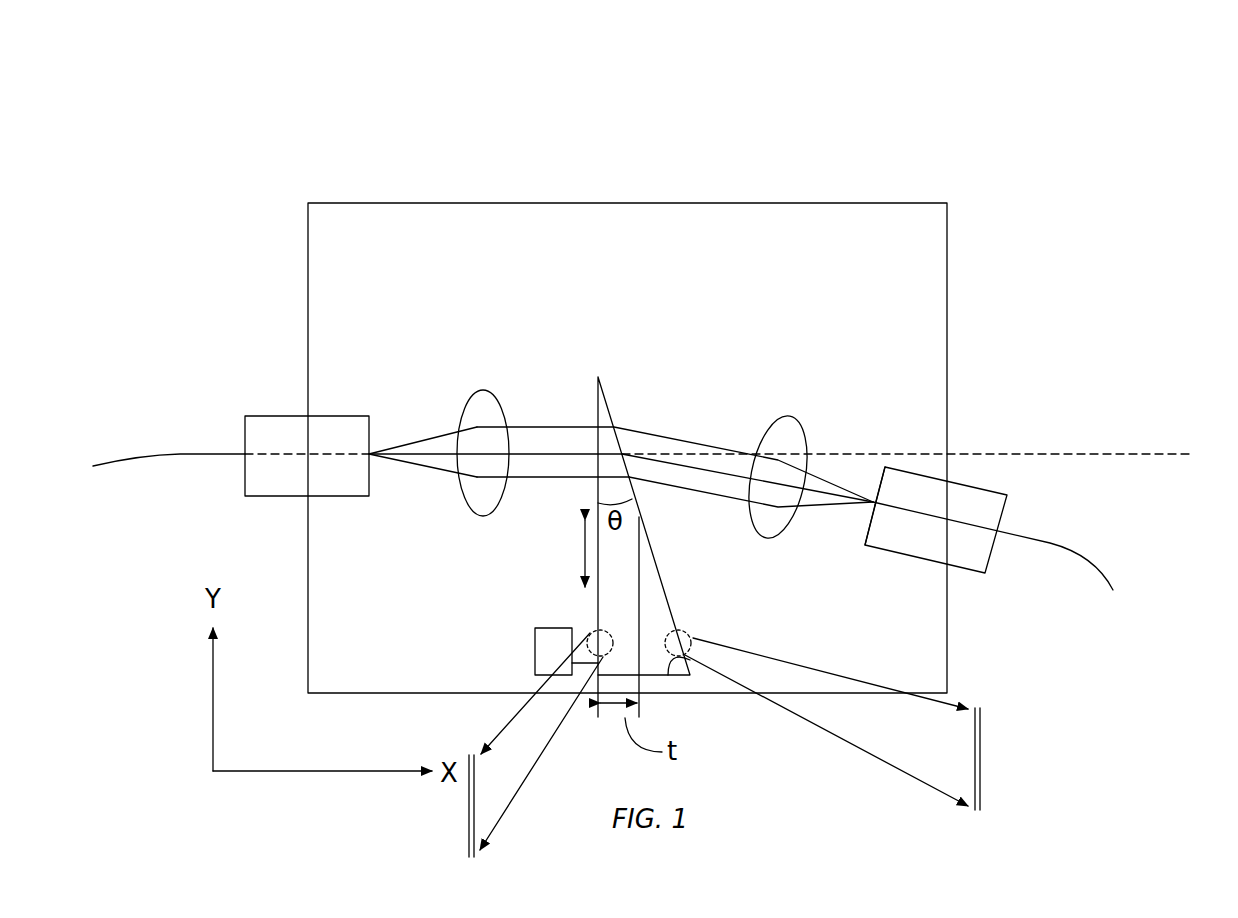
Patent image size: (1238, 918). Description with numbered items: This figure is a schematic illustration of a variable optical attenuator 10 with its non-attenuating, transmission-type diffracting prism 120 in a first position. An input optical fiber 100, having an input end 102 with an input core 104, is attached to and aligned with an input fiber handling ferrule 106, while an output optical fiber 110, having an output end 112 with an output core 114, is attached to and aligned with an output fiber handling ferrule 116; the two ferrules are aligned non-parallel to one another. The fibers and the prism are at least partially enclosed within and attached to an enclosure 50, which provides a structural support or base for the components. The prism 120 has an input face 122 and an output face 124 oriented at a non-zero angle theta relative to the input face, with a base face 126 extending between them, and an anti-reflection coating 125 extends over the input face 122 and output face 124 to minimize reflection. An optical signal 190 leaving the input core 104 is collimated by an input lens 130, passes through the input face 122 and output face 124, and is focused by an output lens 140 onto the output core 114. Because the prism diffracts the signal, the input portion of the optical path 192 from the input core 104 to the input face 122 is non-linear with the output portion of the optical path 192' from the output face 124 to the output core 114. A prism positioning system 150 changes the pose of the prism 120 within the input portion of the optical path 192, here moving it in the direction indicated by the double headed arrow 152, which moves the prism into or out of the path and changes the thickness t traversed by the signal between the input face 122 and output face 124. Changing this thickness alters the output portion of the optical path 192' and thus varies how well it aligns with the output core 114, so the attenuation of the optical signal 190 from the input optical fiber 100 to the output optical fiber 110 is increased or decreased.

The variable optical attenuator 10 is at (998, 103).
The enclosure 50 is at (797, 203).
The input optical fiber 100 is at (215, 452).
The input end 102 is at (375, 452).
The input core 104 is at (375, 457).
The input fiber handling ferrule 106 is at (277, 416).
The output optical fiber 110 is at (1048, 543).
The output end 112 is at (873, 500).
The output core 114 is at (873, 505).
The output fiber handling ferrule 116 is at (970, 482).
The non-attenuating, transmission-type diffracting prism 120 is at (690, 640).
The input face 122 is at (600, 628).
The output face 124 is at (664, 590).
The anti-reflection coating 125 is at (469, 806).
The base face 126 is at (683, 665).
The input lens 130 is at (482, 390).
The output lens 140 is at (790, 415).
The prism positioning system 150 is at (537, 687).
The double headed arrow 152 is at (583, 548).
The optical signal 190 is at (572, 427).
The input portion of the optical path 192 is at (553, 500).
The output portion of the optical path 192' is at (751, 503).